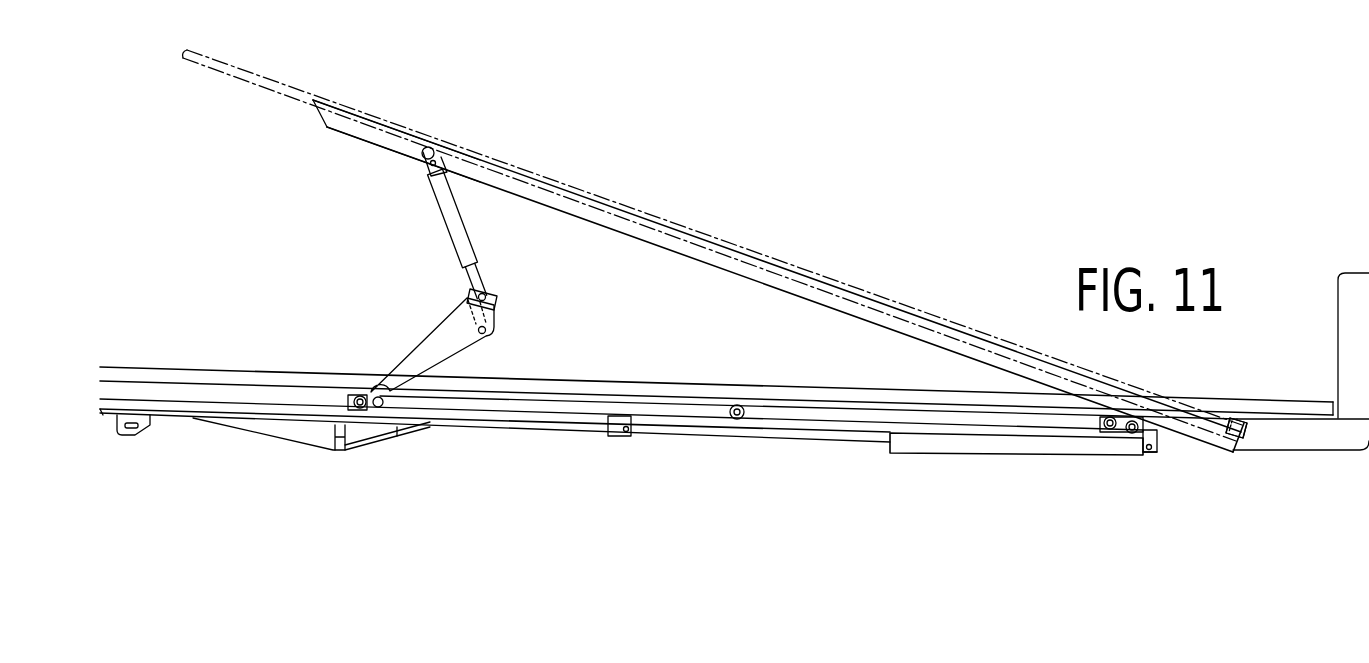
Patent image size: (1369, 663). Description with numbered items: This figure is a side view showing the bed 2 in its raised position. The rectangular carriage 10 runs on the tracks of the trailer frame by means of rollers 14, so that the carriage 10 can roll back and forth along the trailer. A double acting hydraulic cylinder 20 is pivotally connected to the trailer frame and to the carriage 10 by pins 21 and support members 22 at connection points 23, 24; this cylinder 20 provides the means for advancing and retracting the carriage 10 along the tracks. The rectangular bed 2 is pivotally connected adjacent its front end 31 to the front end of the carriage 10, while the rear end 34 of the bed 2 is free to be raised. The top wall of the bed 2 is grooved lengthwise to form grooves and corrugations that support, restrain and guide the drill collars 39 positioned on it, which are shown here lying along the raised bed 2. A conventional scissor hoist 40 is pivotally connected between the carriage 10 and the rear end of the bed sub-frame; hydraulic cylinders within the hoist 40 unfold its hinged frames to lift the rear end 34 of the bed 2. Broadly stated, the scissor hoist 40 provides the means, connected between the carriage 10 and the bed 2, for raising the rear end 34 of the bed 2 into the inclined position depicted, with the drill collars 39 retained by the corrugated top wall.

The bed 2 is at (785, 282).
The carriage 10 is at (672, 411).
The rollers 14 is at (367, 394).
The double acting hydraulic cylinder 20 is at (968, 442).
The pins 21 is at (630, 434).
The support members 22 is at (613, 439).
The connection point 23 is at (1145, 456).
The connection point 24 is at (606, 433).
The front end 31 is at (1235, 452).
The rear end 34 is at (350, 127).
The drill collars 39 is at (290, 84).
The scissor hoist 40 is at (518, 289).